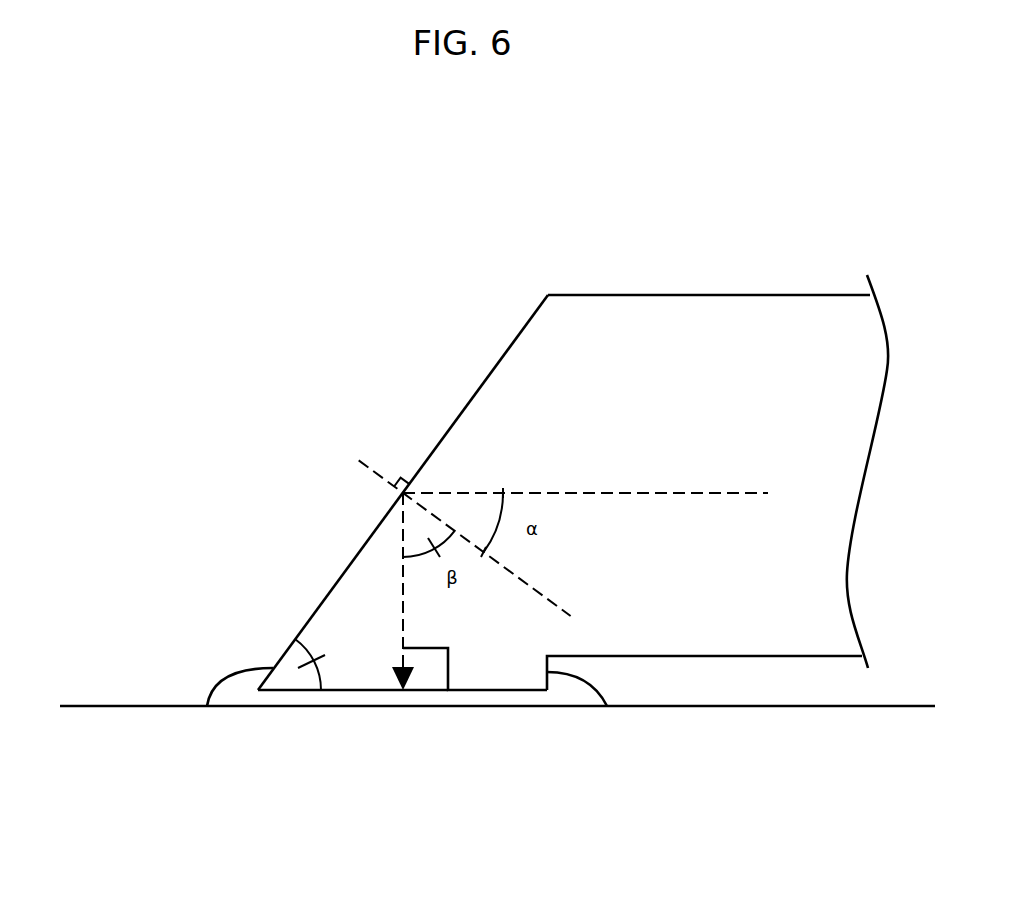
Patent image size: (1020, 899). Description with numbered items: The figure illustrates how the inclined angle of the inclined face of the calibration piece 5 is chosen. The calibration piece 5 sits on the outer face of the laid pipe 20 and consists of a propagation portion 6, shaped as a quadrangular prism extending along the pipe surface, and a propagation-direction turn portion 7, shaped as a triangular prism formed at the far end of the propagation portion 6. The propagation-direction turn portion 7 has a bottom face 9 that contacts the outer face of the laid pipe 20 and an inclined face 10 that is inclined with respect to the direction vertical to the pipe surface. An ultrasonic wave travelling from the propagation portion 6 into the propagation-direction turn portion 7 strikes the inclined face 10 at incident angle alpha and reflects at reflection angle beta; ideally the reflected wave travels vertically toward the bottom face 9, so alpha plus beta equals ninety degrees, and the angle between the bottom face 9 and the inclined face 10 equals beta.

The laid pipe 20 is at (112, 705).
The inclined face 10 is at (458, 413).
The bottom face 9 is at (370, 690).
The propagation-direction turn portion 7 is at (513, 673).
The propagation portion 6 is at (669, 642).
The calibration piece 5 is at (768, 656).